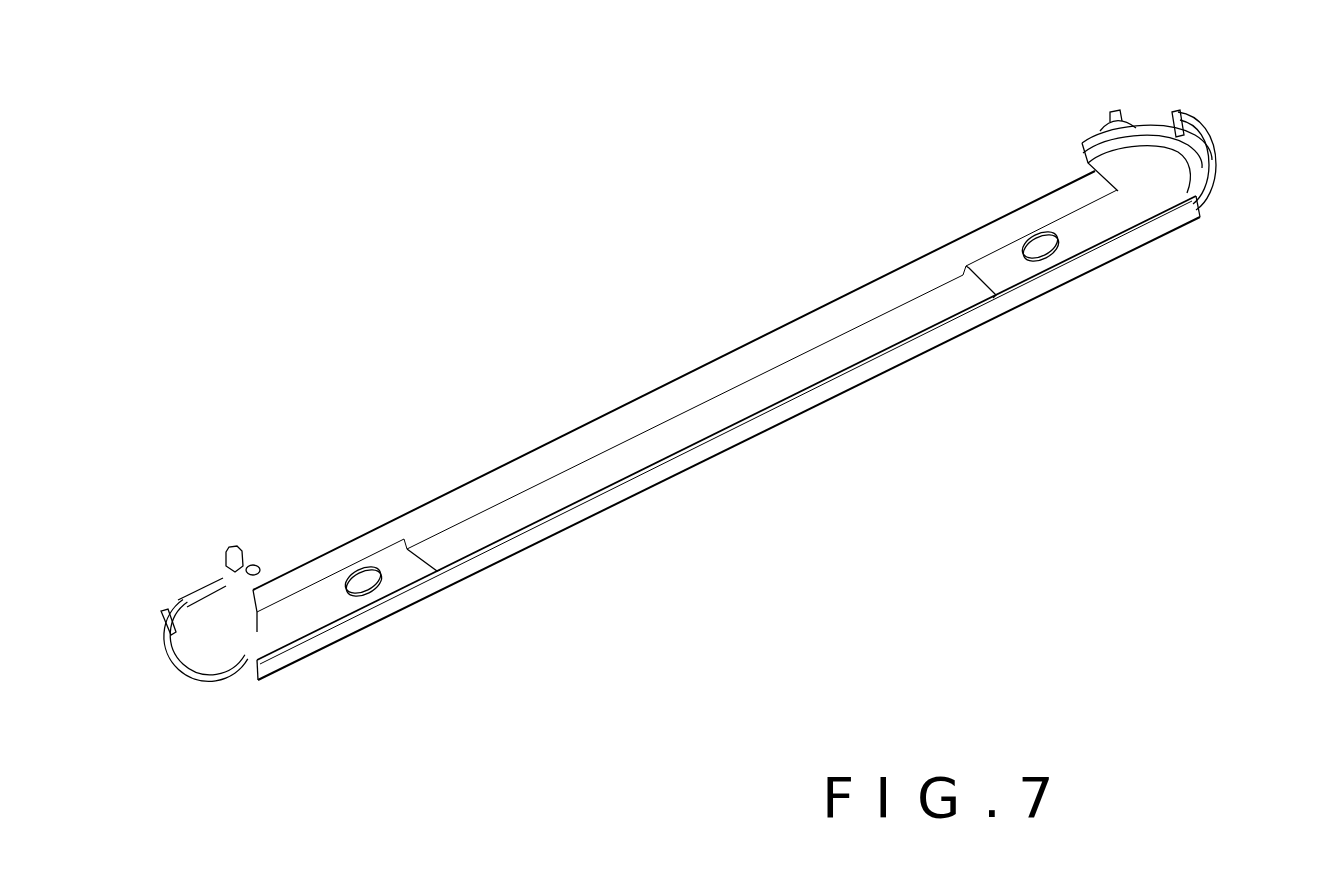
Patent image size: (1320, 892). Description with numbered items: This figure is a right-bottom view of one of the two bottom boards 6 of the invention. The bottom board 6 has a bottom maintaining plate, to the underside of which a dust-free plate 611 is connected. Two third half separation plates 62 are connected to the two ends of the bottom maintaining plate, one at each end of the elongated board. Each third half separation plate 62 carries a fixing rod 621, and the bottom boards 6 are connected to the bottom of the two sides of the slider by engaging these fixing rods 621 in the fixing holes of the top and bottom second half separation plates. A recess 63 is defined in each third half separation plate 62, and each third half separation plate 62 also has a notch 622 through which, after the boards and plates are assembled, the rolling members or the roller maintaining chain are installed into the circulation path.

The bottom board 6 is at (669, 408).
The dust-free plate 611 is at (345, 628).
The third half separation plate 62 is at (222, 572).
The fixing rod 621 is at (243, 548).
The notch 622 is at (185, 606).
The recess 63 is at (192, 658).